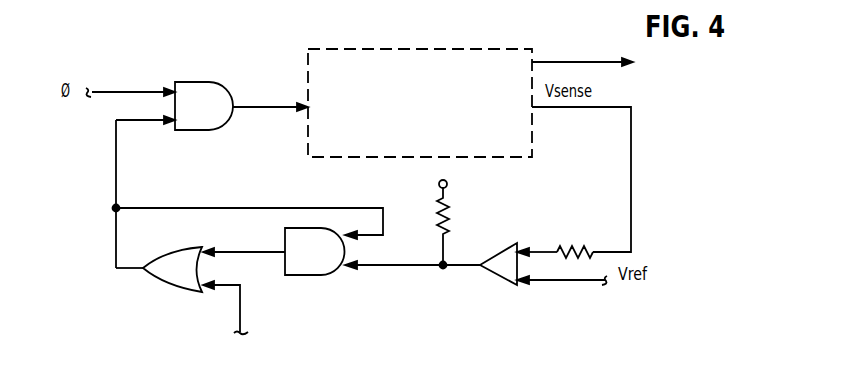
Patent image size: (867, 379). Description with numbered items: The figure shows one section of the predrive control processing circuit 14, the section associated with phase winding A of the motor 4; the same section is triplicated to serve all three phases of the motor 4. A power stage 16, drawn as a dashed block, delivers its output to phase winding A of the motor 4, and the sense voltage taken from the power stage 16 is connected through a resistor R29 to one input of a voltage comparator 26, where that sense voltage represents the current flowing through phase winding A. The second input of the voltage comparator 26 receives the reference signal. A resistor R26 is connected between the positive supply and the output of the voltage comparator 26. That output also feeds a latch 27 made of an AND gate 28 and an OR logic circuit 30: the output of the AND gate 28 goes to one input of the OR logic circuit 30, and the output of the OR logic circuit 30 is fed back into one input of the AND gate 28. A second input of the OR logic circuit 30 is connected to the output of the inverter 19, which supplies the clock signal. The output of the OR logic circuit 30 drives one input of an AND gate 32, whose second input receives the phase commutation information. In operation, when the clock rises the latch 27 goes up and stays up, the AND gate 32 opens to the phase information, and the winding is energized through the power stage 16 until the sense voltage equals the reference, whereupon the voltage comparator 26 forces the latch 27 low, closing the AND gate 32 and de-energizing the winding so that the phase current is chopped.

The predrive control processing circuit 14 is at (268, 44).
The power stage 16 is at (428, 47).
The AND gate 32 is at (216, 87).
The AND gate 28 is at (326, 276).
The OR logic circuit 30 is at (180, 293).
The voltage comparator 26 is at (504, 249).
The latch 27 is at (269, 314).
The resistor R26 is at (434, 211).
The resistor R29 is at (558, 237).
The motor 4 is at (727, 72).
The inverter 19 is at (293, 359).